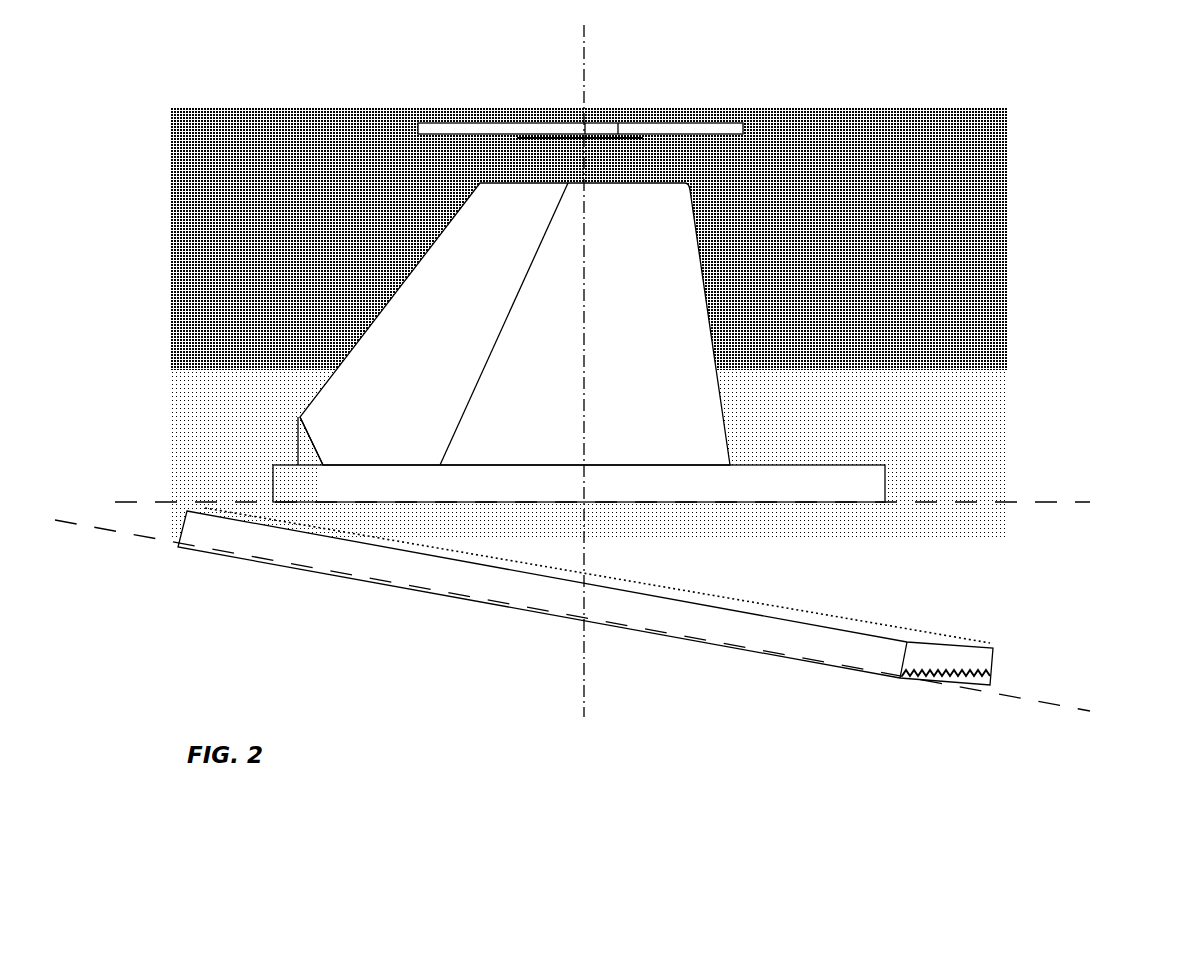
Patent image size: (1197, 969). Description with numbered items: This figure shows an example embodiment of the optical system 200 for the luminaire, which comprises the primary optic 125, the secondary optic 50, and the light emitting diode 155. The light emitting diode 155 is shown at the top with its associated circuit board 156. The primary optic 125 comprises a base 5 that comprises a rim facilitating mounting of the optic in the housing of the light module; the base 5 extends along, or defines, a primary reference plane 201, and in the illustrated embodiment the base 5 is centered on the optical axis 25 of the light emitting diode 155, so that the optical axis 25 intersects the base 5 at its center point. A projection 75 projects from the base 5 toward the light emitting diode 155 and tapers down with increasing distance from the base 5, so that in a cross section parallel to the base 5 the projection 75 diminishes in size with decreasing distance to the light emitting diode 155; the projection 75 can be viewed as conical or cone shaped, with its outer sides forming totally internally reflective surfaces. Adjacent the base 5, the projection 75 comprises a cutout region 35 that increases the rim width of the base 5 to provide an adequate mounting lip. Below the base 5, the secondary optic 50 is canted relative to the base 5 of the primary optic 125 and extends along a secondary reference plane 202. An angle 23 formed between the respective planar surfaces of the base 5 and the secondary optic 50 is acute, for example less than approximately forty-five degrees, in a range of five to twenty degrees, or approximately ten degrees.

The optical system 200 is at (1038, 128).
The circuit board 156 is at (693, 130).
The light emitting diode 155 is at (628, 131).
The primary optic 125 is at (735, 250).
The projection 75 is at (545, 324).
The cutout region 35 is at (290, 446).
The base 5 is at (838, 467).
The primary reference plane 201 is at (1033, 500).
The angle 23 is at (540, 512).
The optical axis 25 is at (592, 670).
The secondary optic 50 is at (878, 690).
The secondary reference plane 202 is at (1085, 709).